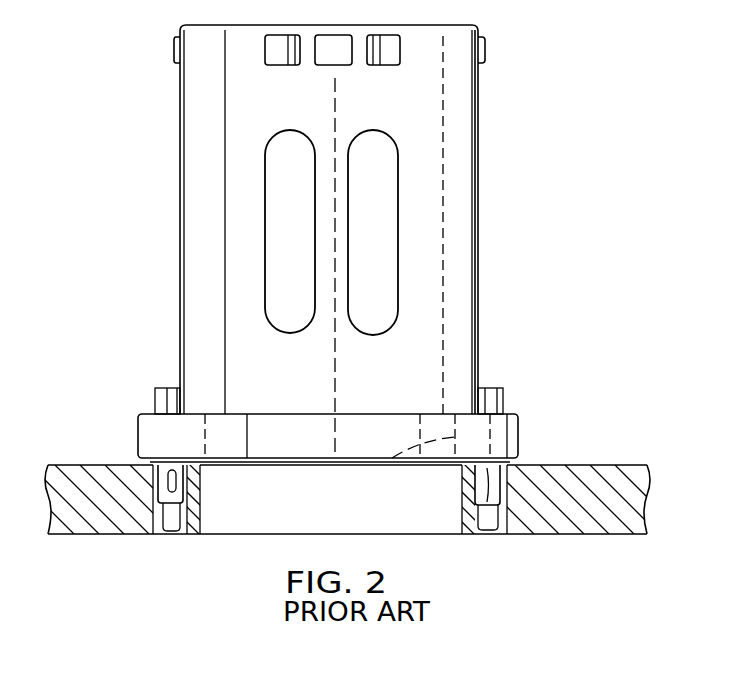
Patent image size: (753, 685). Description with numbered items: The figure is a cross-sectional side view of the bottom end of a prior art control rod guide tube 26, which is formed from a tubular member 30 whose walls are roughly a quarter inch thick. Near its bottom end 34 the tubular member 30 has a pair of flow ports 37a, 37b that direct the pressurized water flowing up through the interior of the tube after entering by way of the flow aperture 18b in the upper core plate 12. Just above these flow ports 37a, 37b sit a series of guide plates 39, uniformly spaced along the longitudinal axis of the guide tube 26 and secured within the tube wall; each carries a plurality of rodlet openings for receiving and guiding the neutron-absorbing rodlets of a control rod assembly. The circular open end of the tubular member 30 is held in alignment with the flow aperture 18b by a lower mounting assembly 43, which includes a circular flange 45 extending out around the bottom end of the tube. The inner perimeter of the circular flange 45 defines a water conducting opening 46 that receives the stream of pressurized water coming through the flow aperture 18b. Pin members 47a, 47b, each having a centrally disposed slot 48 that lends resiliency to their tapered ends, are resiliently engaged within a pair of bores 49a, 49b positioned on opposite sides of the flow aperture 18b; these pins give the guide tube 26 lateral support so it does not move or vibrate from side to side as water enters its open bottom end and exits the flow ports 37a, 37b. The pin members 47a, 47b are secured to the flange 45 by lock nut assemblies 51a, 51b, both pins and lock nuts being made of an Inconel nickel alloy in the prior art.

The upper core plate 12 is at (640, 512).
The flow aperture 18b is at (462, 505).
The control rod guide tube 26 is at (107, 173).
The tubular member 30 is at (480, 185).
The bottom end 34 is at (232, 462).
The flow port 37a is at (262, 262).
The flow port 37b is at (400, 262).
The guide plates 39 is at (392, 57).
The lower mounting assembly 43 is at (128, 445).
The circular flange 45 is at (393, 430).
The water conducting opening 46 is at (400, 450).
The pin member 47a is at (160, 515).
The pin member 47b is at (497, 520).
The slot 48 is at (157, 505).
The bore 49a is at (185, 520).
The bore 49b is at (475, 535).
The lock nut assembly 51a is at (158, 392).
The lock nut assembly 51b is at (495, 392).